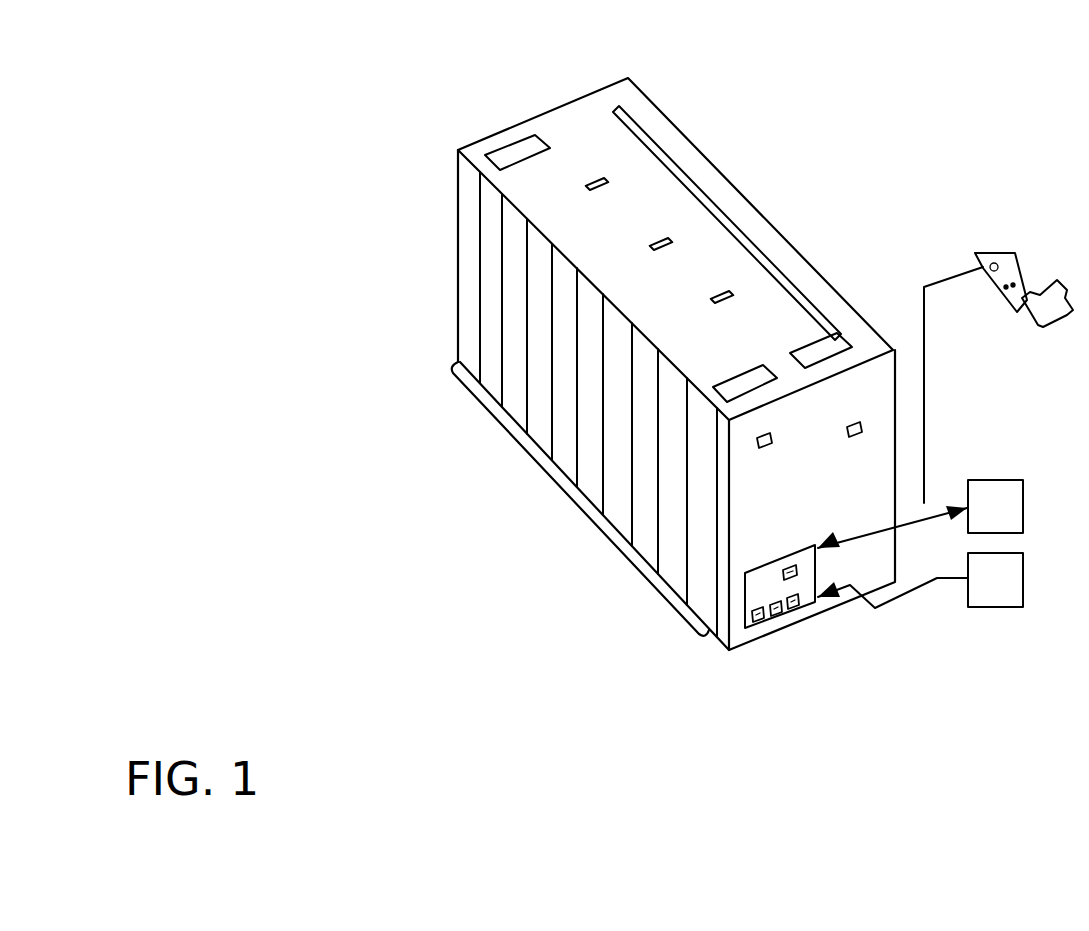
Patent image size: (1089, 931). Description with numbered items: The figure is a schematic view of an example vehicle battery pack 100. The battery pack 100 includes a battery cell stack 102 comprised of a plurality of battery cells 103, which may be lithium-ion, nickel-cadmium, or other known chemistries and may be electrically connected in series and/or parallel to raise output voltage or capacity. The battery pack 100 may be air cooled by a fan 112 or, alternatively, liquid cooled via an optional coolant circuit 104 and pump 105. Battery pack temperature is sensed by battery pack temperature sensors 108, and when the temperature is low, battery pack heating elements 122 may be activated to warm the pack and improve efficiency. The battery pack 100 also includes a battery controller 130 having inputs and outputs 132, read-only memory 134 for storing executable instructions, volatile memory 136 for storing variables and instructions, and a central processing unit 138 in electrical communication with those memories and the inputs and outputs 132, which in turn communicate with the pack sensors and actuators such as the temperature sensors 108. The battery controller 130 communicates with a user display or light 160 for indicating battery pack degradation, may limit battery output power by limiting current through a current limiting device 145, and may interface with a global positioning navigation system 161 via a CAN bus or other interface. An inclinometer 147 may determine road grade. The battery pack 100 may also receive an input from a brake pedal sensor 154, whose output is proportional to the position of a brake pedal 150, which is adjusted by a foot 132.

The battery pack 100 is at (360, 60).
The battery cell stack 102 is at (560, 510).
The battery cells 103 is at (512, 294).
The coolant circuit 104 is at (777, 264).
The pump 105 is at (818, 341).
The battery pack temperature sensors 108 is at (595, 180).
The fan 112 is at (744, 374).
The battery pack heating elements 122 is at (513, 140).
The battery controller 130 is at (803, 548).
The inputs and outputs 132 is at (758, 622).
The read-only memory 134 is at (779, 616).
The volatile memory 136 is at (799, 602).
The central processing unit 138 is at (796, 570).
The current limiting device 145 is at (848, 452).
The inclinometer 147 is at (755, 463).
The brake pedal 150 is at (1018, 311).
The brake pedal sensor 154 is at (983, 267).
The user display or light 160 is at (920, 514).
The global positioning navigation system 161 is at (920, 580).